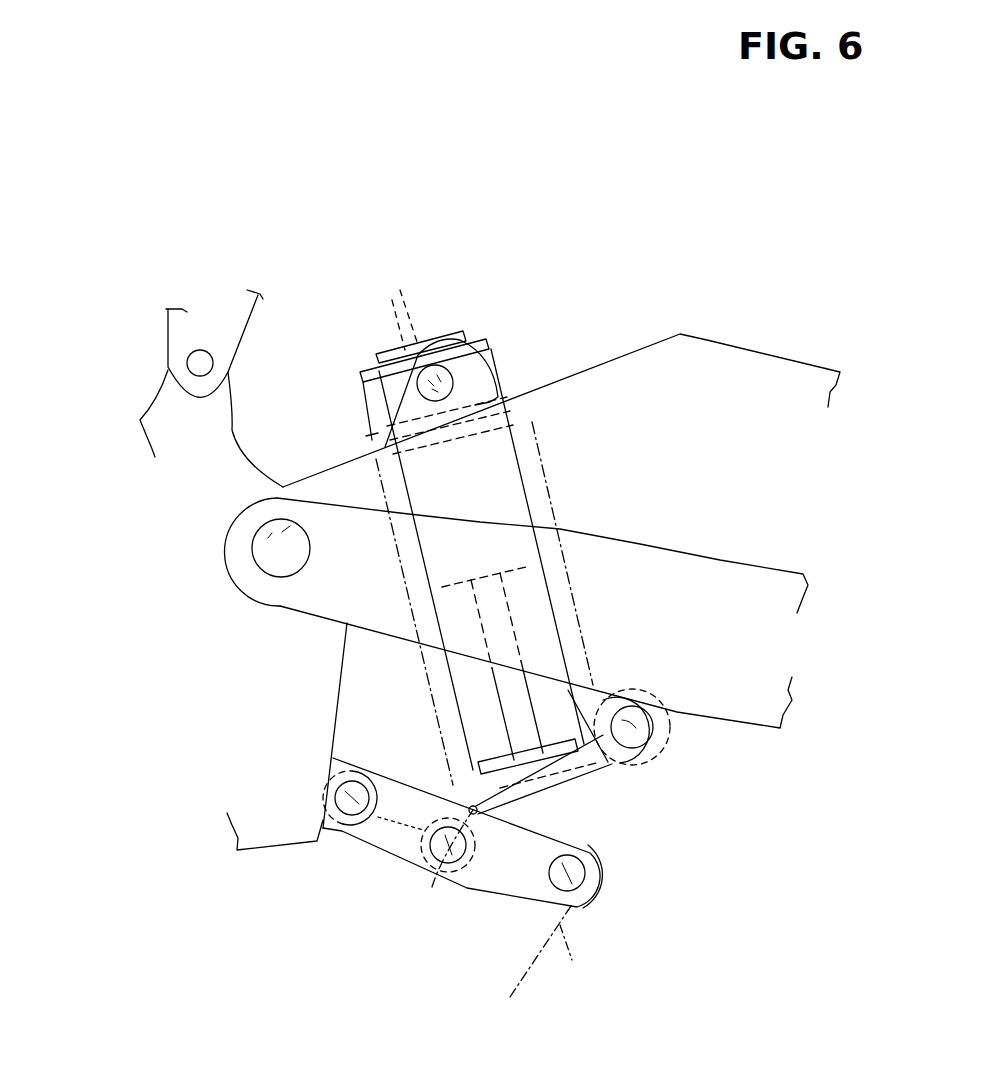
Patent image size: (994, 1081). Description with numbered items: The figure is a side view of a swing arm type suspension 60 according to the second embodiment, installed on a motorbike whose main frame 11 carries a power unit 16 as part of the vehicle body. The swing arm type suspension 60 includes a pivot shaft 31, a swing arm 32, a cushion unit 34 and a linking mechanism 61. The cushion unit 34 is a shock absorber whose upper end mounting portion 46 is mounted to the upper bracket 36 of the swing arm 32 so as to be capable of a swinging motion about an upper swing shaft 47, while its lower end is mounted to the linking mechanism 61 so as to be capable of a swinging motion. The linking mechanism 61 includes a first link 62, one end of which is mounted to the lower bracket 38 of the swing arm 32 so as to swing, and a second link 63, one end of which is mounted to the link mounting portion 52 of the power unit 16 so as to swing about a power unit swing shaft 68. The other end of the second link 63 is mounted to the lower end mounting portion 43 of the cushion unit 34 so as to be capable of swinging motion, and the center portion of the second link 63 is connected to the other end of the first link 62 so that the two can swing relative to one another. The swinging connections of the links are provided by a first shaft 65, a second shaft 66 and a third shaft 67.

The main frame 11 is at (168, 332).
The power unit 16 is at (258, 852).
The pivot shaft 31 is at (252, 540).
The swing arm 32 is at (708, 340).
The cushion unit 34 is at (479, 300).
The upper bracket 36 is at (500, 368).
The lower bracket 38 is at (673, 725).
The lower end mounting portion 43 is at (580, 843).
The upper end mounting portion 46 is at (370, 390).
The upper swing shaft 47 is at (370, 408).
The link mounting portion 52 is at (325, 843).
The swing arm type suspension 60 is at (357, 288).
The linking mechanism 61 is at (392, 928).
The first link 62 is at (575, 817).
The second link 63 is at (490, 898).
The first shaft 65 is at (650, 755).
The second shaft 66 is at (432, 887).
The third shaft 67 is at (577, 905).
The power unit swing shaft 68 is at (352, 770).